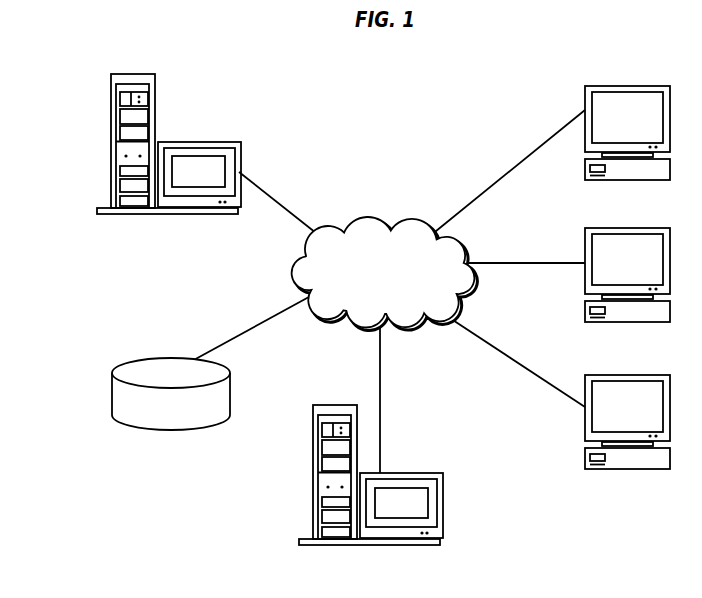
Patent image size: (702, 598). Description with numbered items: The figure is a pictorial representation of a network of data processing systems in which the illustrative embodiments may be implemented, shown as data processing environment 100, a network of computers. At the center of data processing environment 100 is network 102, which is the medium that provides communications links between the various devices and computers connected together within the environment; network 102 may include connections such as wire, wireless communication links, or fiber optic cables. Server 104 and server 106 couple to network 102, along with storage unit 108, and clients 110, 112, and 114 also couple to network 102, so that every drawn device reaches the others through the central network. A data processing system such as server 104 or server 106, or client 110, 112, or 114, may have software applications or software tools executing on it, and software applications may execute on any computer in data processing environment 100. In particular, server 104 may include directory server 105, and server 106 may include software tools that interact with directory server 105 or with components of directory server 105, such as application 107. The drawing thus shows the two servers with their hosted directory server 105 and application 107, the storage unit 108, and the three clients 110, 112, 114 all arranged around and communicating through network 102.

The data processing environment 100 is at (57, 99).
The network 102 is at (370, 290).
The server 104 is at (212, 236).
The directory server 105 is at (171, 103).
The server 106 is at (416, 566).
The application 107 is at (429, 505).
The storage unit 108 is at (159, 428).
The client 110 is at (668, 340).
The client 112 is at (666, 488).
The client 114 is at (668, 200).